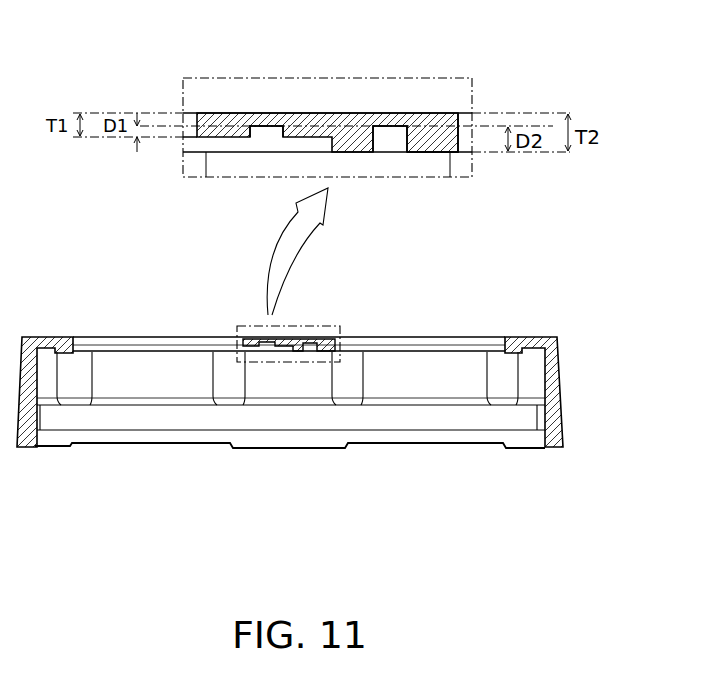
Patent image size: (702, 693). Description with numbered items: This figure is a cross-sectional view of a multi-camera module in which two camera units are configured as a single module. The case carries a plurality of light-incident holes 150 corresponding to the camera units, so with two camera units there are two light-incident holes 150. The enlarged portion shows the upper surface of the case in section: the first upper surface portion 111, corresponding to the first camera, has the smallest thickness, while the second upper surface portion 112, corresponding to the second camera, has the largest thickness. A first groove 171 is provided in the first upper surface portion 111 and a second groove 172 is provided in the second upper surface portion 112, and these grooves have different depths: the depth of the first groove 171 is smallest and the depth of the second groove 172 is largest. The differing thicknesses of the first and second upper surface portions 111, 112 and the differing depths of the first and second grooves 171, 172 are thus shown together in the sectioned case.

The first upper surface portion 111 is at (223, 115).
The second upper surface portion 112 is at (437, 120).
The first groove 171 is at (263, 128).
The second groove 172 is at (378, 128).
The light-incident hole 150 is at (169, 343).